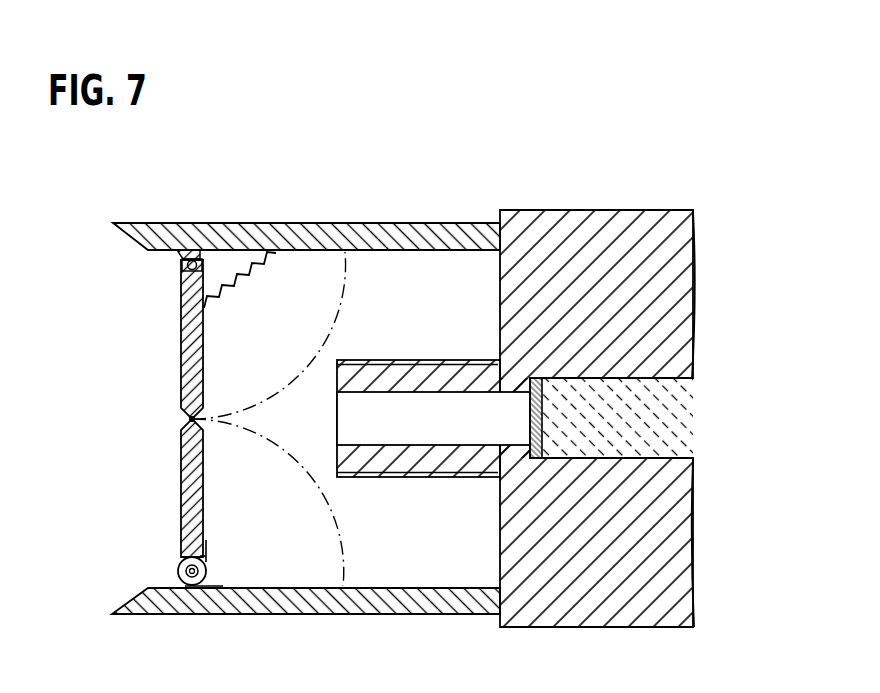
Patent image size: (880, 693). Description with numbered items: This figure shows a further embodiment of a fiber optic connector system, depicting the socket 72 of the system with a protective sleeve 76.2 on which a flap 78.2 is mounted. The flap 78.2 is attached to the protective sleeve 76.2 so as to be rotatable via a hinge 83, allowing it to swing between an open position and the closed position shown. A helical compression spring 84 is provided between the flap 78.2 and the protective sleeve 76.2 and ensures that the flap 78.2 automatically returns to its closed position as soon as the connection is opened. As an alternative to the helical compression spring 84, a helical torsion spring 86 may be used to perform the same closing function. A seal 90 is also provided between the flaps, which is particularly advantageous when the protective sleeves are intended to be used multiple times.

The socket 72 is at (612, 170).
The protective sleeve 76.2 is at (325, 223).
The flap 78.2 is at (190, 337).
The hinge 83 is at (186, 265).
The helical compression spring 84 is at (237, 282).
The helical torsion spring 86 is at (206, 566).
The seal 90 is at (192, 419).